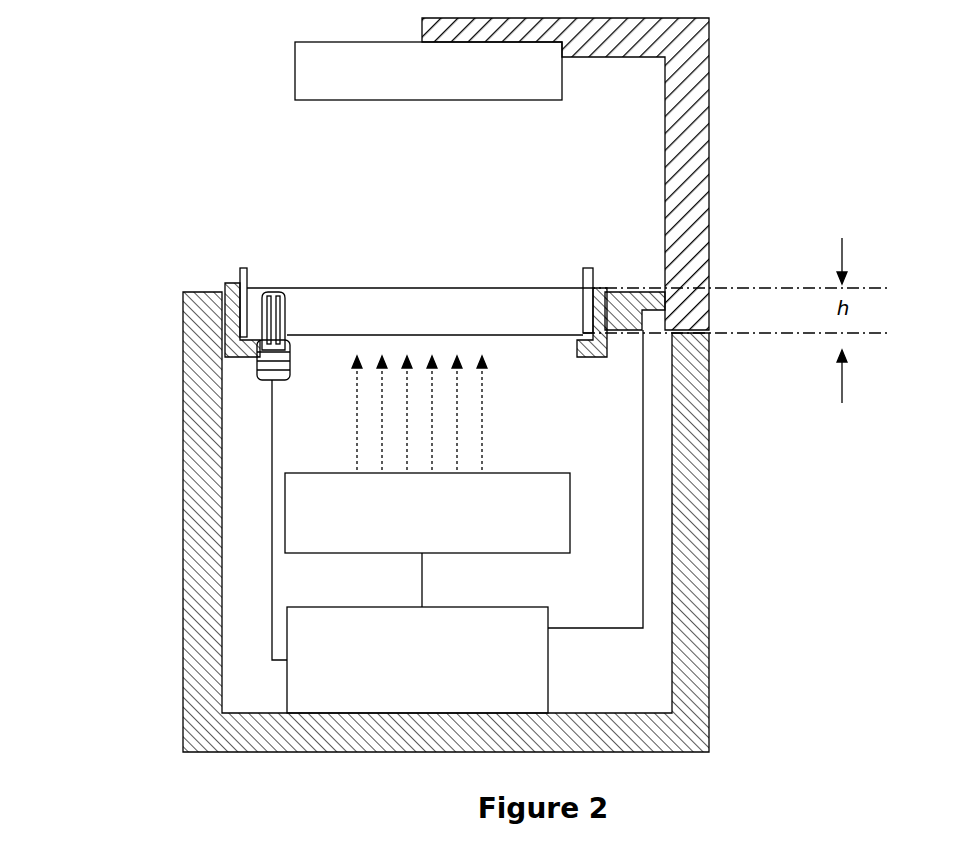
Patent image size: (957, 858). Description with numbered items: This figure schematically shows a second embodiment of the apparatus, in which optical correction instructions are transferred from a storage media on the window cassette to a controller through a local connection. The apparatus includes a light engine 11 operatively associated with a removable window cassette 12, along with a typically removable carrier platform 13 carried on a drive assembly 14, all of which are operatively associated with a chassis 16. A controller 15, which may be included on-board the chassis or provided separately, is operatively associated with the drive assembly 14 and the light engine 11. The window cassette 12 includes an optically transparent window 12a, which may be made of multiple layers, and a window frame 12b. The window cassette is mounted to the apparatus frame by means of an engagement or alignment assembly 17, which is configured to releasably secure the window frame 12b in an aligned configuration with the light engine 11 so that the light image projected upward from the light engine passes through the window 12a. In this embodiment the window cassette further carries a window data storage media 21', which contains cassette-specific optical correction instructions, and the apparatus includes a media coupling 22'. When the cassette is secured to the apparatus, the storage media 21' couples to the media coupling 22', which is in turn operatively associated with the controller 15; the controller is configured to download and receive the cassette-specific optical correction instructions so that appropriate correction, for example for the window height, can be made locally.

The light engine 11 is at (427, 454).
The removable window cassette 12 is at (416, 325).
The optically transparent window 12a is at (415, 311).
The window frame 12b is at (583, 275).
The carrier platform 13 is at (428, 71).
The drive assembly 14 is at (708, 170).
The controller 15 is at (465, 521).
The chassis 16 is at (690, 605).
The engagement assembly 17 is at (605, 291).
The window data storage media 21' is at (242, 238).
The media coupling 22' is at (162, 500).